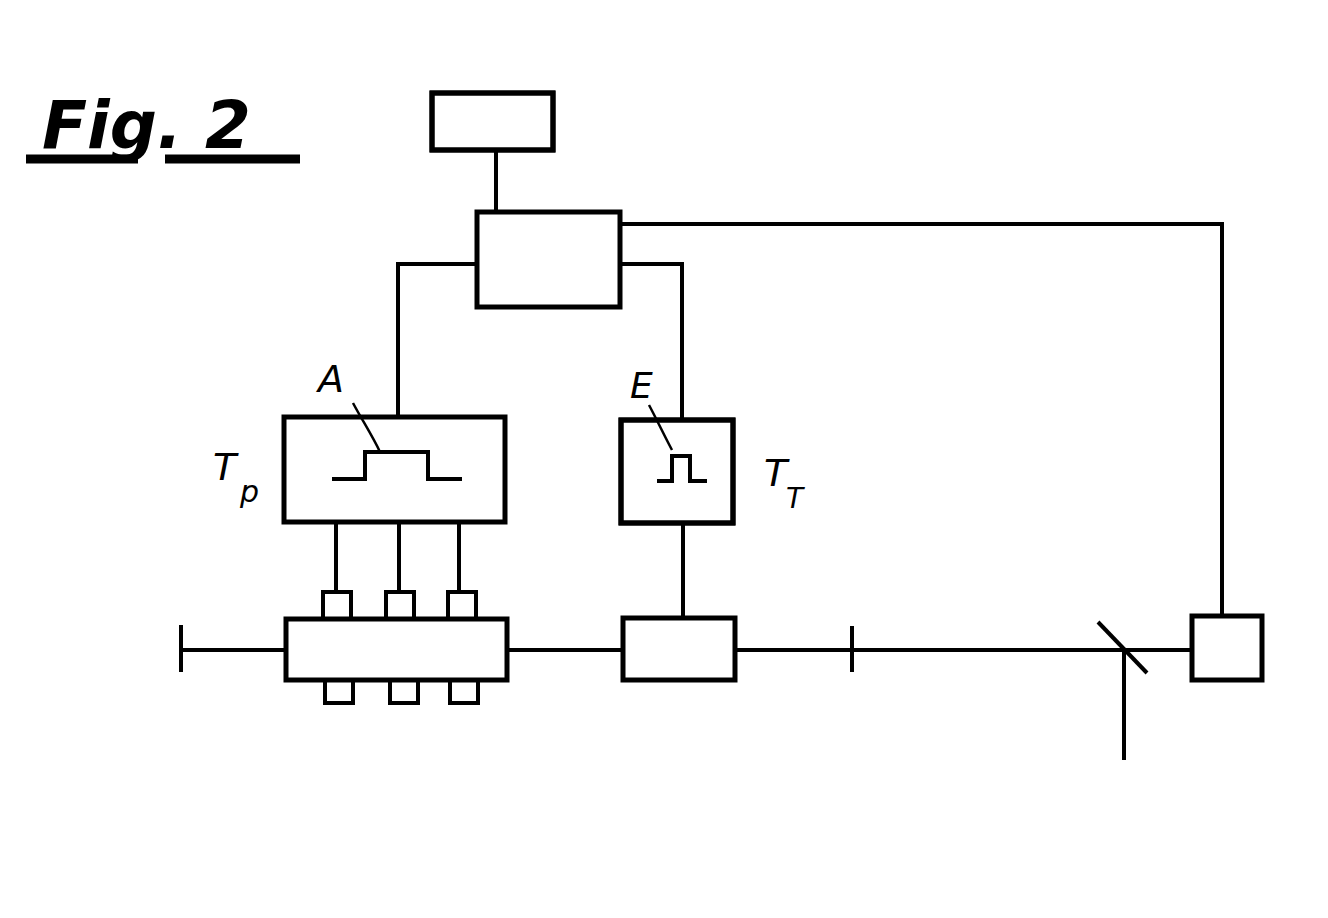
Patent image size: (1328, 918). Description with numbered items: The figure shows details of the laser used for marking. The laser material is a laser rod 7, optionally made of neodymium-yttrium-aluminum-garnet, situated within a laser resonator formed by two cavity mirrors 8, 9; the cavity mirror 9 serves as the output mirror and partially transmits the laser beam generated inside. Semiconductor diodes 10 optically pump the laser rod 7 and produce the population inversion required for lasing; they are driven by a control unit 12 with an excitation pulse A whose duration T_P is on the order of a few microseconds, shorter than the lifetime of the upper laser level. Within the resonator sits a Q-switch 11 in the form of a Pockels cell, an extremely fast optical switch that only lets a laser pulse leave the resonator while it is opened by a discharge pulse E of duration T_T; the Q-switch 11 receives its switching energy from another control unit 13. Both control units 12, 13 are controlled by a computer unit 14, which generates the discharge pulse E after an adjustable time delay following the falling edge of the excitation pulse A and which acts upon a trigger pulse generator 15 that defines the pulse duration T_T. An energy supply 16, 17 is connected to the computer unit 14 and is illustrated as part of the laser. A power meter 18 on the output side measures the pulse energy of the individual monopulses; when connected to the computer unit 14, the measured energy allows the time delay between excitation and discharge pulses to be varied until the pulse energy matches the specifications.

The laser rod 7 is at (480, 650).
The cavity mirror 8 is at (178, 660).
The cavity mirror 9 is at (852, 668).
The semiconductor diodes 10 is at (407, 690).
The Q-switch 11 is at (680, 648).
The control unit 12 is at (458, 447).
The control unit 13 is at (706, 452).
The computer unit 14 is at (545, 245).
The trigger pulse generator 15 is at (677, 471).
The energy supply 16 is at (492, 122).
The energy supply 17 is at (492, 121).
The power meter 18 is at (1233, 650).